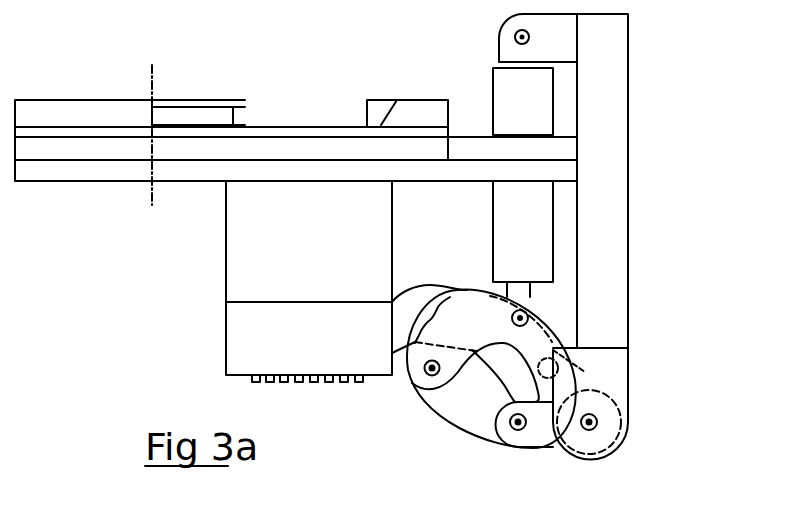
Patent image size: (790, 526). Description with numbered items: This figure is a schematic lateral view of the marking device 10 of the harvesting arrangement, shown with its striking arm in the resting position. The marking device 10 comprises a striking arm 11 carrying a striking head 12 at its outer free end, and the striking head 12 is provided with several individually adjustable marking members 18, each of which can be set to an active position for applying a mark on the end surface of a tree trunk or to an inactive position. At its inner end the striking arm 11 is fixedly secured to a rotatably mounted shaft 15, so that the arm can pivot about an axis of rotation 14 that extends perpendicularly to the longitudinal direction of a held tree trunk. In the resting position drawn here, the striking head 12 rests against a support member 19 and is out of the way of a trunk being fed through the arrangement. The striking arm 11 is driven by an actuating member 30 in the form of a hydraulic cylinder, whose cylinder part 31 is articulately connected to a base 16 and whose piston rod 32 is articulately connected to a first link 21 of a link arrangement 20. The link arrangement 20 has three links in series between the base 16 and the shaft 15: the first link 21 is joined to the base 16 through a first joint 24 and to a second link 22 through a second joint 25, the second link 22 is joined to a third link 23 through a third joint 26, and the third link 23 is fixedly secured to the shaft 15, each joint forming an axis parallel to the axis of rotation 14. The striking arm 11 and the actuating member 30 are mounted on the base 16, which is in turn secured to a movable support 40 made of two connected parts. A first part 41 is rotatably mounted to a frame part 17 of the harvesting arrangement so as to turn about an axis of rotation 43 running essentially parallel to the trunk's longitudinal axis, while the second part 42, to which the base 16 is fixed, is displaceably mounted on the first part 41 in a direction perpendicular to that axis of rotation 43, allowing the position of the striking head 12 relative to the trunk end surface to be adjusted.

The marking device 10 is at (156, 298).
The striking arm 11 is at (417, 302).
The striking head 12 is at (245, 344).
The axis of rotation 14 is at (597, 430).
The shaft 15 is at (613, 427).
The base 16 is at (617, 167).
The frame part 17 is at (73, 110).
The marking members 18 is at (280, 386).
The support member 19 is at (243, 243).
The link arrangement 20 is at (447, 458).
The first link 21 is at (475, 317).
The second link 22 is at (477, 430).
The third link 23 is at (543, 440).
The first joint 24 is at (556, 366).
The second joint 25 is at (427, 377).
The third joint 26 is at (518, 432).
The actuating member 30 is at (480, 76).
The cylinder part 31 is at (510, 205).
The piston rod 32 is at (527, 292).
The movable support 40 is at (270, 84).
The first part 41 is at (307, 147).
The second part 42 is at (93, 172).
The axis of rotation 43 is at (157, 70).